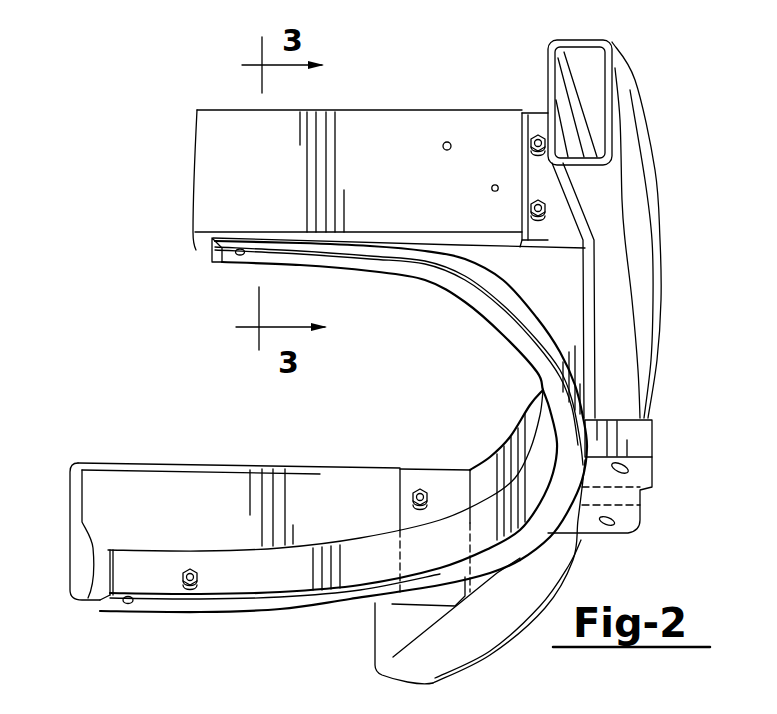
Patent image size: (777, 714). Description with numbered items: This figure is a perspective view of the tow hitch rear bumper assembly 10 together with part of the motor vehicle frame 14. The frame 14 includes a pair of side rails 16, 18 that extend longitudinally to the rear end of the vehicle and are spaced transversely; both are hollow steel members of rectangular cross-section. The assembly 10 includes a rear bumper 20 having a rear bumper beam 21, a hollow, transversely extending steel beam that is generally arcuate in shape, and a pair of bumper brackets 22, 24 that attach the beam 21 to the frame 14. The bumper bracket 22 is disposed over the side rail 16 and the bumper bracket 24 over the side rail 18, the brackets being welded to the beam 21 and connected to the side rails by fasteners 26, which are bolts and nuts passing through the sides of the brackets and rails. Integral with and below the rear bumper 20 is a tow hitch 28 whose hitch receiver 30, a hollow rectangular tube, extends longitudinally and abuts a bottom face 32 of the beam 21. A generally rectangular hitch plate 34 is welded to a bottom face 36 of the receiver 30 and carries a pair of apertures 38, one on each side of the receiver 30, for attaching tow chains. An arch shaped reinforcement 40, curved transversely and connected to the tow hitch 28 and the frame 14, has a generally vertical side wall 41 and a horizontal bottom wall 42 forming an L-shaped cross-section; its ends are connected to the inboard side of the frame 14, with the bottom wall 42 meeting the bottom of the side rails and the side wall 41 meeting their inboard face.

The tow hitch rear bumper assembly 10 is at (665, 106).
The frame 14 is at (313, 521).
The side rail 16 is at (115, 483).
The side rail 18 is at (212, 117).
The rear bumper 20 is at (626, 38).
The rear bumper beam 21 is at (645, 179).
The bumper bracket 22 is at (452, 469).
The bumper bracket 24 is at (533, 168).
The fasteners 26 is at (538, 132).
The tow hitch 28 is at (645, 480).
The hitch receiver 30 is at (637, 436).
The bottom face 32 is at (625, 288).
The hitch plate 34 is at (580, 540).
The bottom face 36 is at (628, 499).
The apertures 38 is at (630, 476).
The arch shaped reinforcement 40 is at (310, 546).
The side wall 41 is at (230, 580).
The bottom wall 42 is at (292, 599).